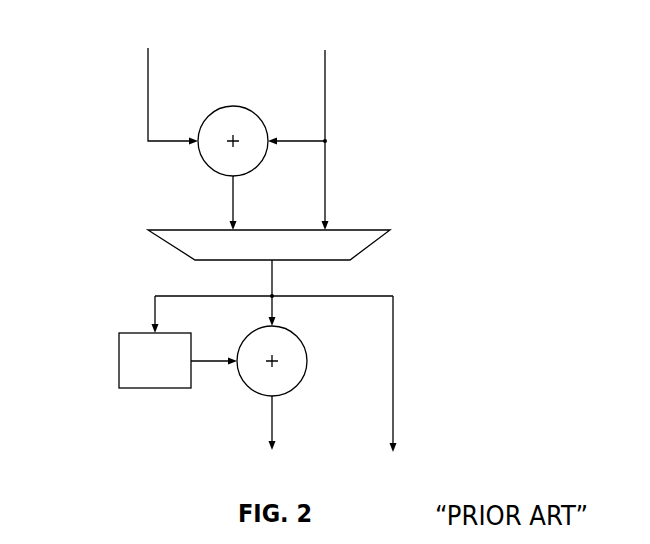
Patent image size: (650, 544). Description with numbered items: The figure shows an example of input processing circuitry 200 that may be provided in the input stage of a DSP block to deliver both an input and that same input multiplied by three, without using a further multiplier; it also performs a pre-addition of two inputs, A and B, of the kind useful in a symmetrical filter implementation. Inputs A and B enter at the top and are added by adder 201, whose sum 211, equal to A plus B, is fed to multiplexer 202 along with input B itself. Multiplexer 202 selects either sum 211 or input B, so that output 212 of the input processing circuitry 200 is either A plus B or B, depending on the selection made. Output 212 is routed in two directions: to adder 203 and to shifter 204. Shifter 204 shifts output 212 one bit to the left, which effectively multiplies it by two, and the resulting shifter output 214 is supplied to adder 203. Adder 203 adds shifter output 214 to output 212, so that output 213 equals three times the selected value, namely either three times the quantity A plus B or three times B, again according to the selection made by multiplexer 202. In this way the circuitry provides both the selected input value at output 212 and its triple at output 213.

The input processing circuitry 200 is at (100, 40).
The adder 201 is at (231, 105).
The multiplexer 202 is at (163, 228).
The adder 203 is at (297, 337).
The shifter 204 is at (135, 332).
The sum 211 is at (234, 197).
The output 212 is at (274, 270).
The output 213 is at (275, 425).
The shifter output 214 is at (222, 367).